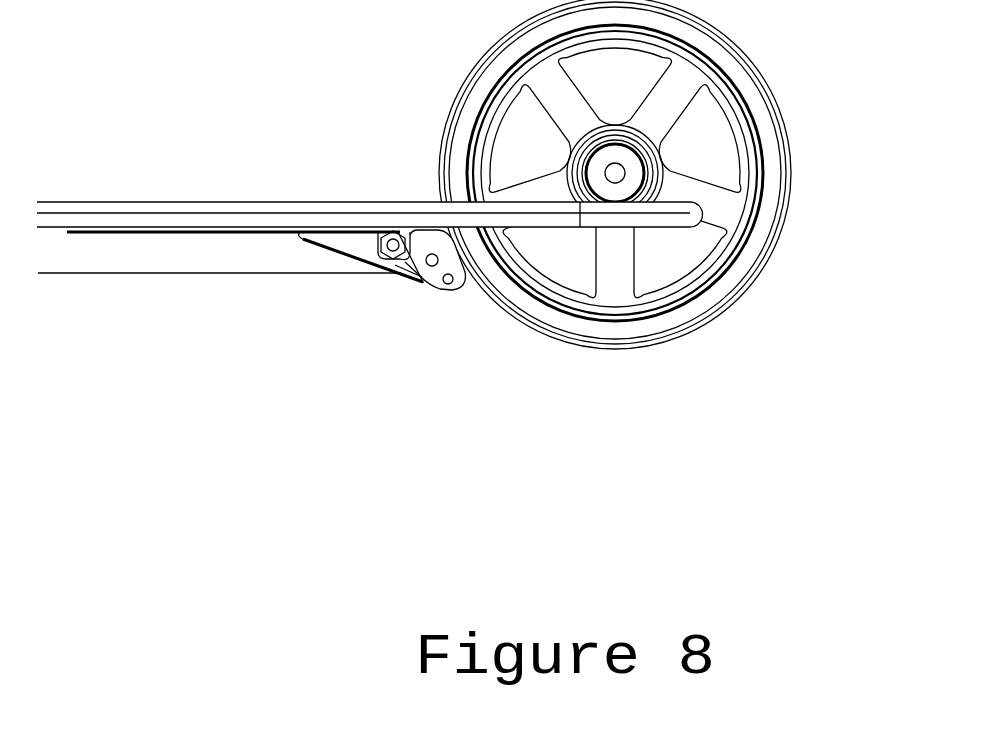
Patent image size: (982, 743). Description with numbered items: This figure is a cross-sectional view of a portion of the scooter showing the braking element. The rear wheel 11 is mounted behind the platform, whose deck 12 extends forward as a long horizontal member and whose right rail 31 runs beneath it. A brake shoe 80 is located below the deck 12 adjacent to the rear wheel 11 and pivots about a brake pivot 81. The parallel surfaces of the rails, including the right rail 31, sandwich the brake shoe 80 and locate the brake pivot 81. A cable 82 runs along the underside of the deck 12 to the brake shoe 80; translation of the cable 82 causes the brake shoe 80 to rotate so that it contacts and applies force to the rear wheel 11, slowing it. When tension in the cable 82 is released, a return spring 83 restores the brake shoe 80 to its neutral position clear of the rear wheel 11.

The rear wheel 11 is at (874, 47).
The deck 12 is at (287, 101).
The right rail 31 is at (190, 248).
The brake shoe 80 is at (460, 279).
The brake pivot 81 is at (432, 266).
The cable 82 is at (125, 234).
The return spring 83 is at (338, 255).